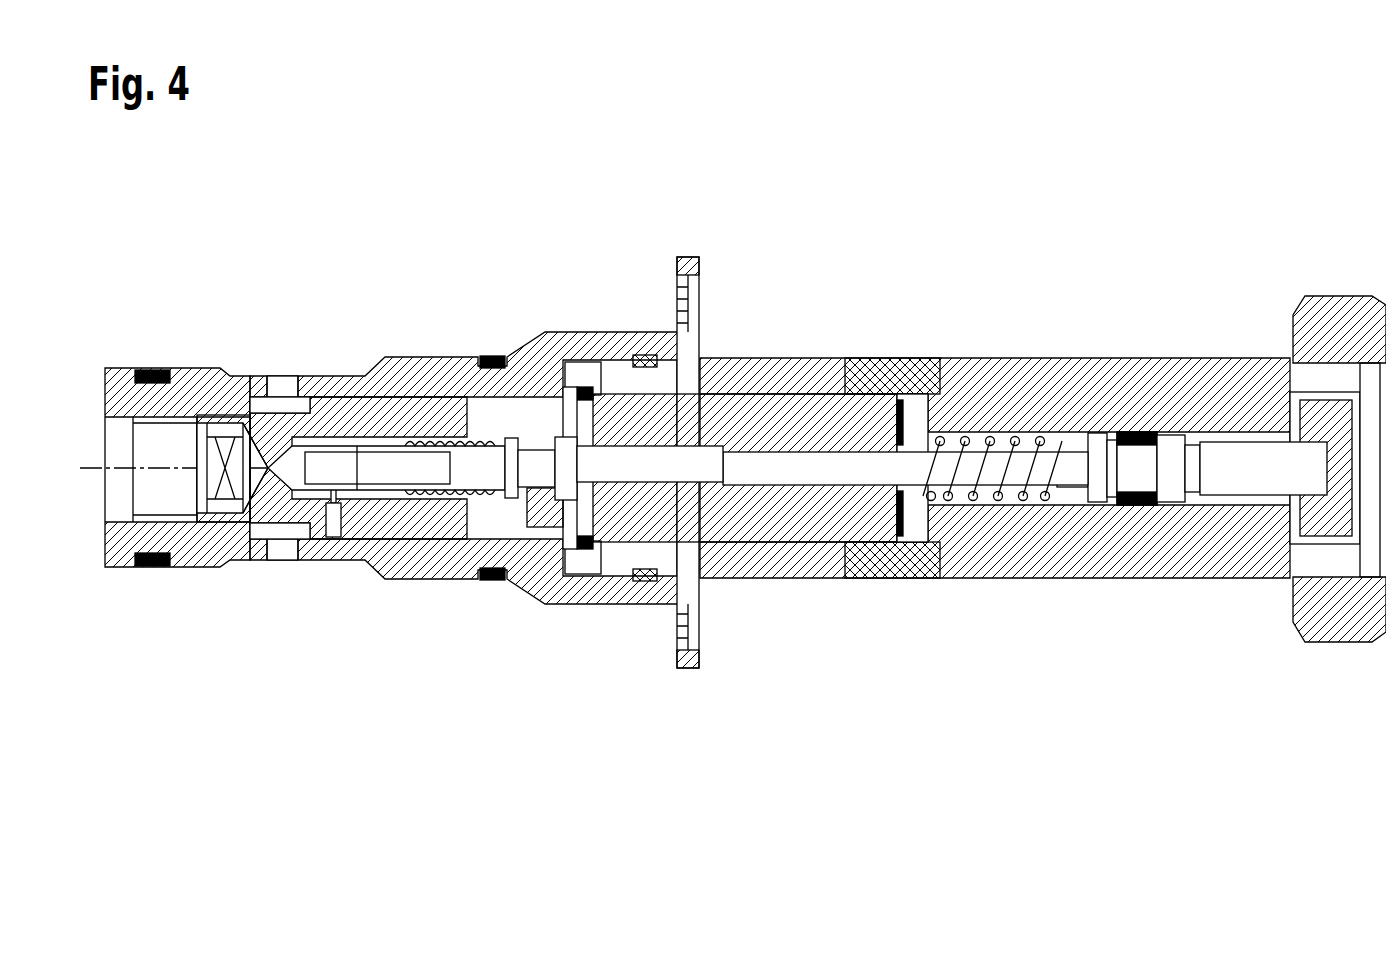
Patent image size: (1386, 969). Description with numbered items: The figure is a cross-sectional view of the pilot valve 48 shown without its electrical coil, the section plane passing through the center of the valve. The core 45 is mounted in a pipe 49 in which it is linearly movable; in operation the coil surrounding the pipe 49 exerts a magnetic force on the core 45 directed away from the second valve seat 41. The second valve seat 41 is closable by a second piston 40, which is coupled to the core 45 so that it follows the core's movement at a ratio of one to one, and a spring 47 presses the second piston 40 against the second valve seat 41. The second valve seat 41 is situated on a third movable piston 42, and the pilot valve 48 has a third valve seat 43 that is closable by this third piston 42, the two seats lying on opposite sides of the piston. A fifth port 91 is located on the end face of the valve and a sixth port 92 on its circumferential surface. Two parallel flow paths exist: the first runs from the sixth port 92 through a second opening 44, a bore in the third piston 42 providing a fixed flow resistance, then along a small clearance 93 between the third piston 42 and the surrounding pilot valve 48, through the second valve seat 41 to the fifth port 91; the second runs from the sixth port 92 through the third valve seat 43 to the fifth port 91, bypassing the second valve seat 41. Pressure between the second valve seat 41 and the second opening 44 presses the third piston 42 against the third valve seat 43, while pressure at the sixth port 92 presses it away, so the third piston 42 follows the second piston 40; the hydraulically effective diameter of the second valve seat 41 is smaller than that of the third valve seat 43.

The second piston 40 is at (483, 477).
The second valve seat 41 is at (262, 517).
The third piston 42 is at (410, 413).
The third valve seat 43 is at (272, 413).
The second opening 44 is at (380, 510).
The core 45 is at (752, 530).
The spring 47 is at (1040, 437).
The pilot valve 48 is at (1142, 240).
The pipe 49 is at (815, 558).
The fifth port 91 is at (115, 503).
The sixth port 92 is at (280, 553).
The small clearance 93 is at (327, 537).